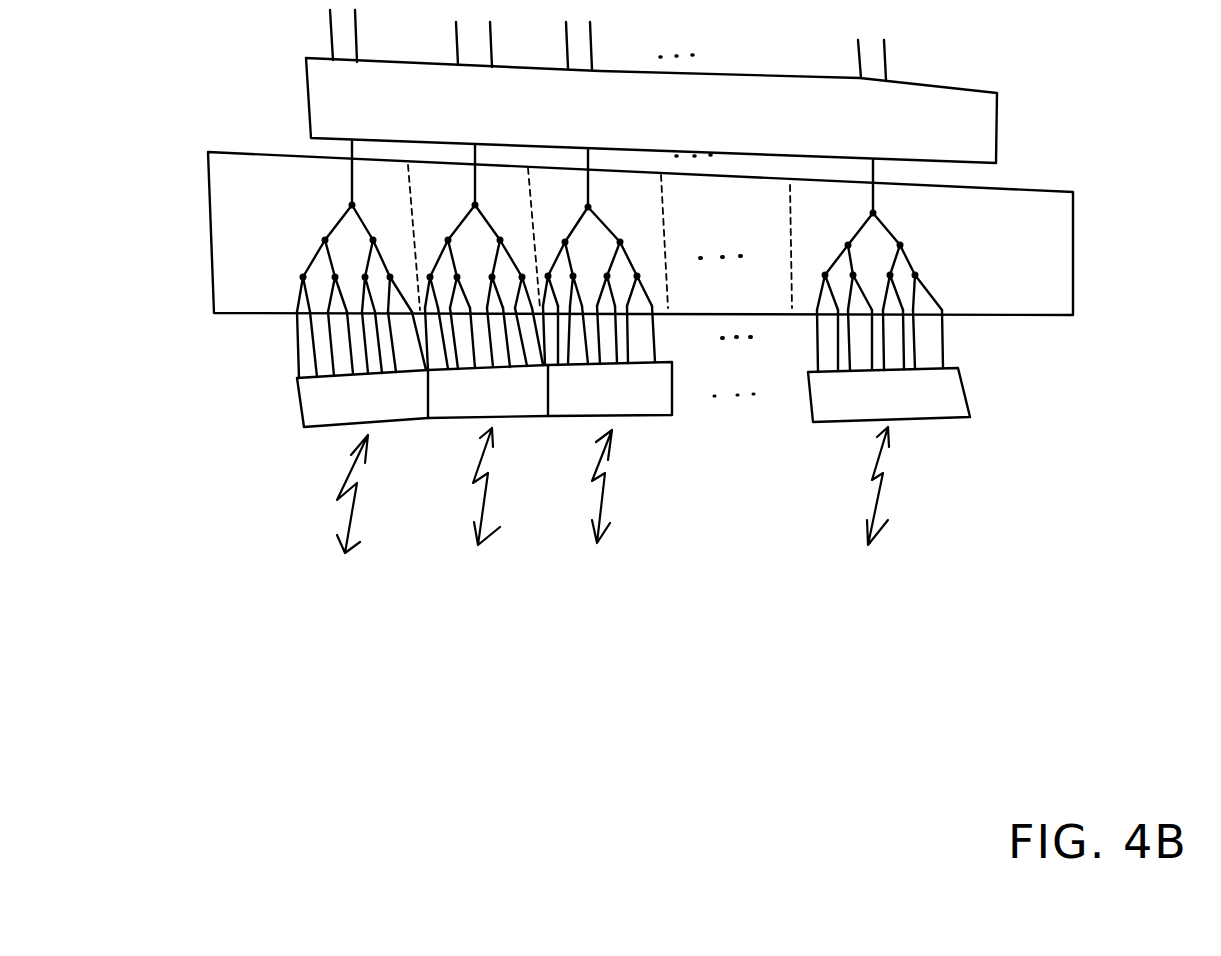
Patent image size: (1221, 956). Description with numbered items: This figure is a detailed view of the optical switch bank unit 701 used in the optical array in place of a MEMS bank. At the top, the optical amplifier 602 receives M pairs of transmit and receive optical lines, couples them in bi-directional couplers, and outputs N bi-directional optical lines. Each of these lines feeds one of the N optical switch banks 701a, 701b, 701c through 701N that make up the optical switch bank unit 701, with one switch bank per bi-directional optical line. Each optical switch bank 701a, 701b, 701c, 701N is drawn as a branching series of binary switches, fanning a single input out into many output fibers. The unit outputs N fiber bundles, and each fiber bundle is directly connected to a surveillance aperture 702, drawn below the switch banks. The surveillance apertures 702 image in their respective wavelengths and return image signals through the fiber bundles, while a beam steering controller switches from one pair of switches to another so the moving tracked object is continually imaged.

The optical amplifier 602 is at (651, 86).
The optical switch bank unit 701 is at (693, 233).
The optical switch bank 701a is at (315, 226).
The optical switch bank 701b is at (476, 226).
The optical switch bank 701c is at (597, 227).
The optical switch bank 701N is at (936, 235).
The surveillance aperture 702 is at (633, 366).